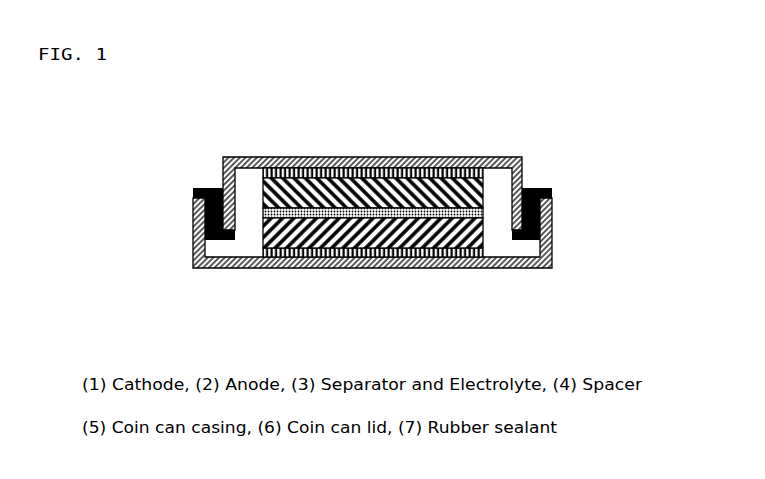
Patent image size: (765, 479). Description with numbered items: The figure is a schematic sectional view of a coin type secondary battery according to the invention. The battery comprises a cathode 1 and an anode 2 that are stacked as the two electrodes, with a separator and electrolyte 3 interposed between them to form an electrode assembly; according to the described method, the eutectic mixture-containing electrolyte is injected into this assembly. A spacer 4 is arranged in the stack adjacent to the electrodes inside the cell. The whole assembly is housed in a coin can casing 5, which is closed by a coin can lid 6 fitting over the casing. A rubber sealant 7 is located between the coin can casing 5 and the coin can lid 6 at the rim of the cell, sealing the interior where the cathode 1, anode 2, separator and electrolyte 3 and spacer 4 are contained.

The cathode 1 is at (373, 190).
The anode 2 is at (342, 240).
The separator and electrolyte 3 is at (416, 206).
The spacer 4 is at (313, 171).
The coin can casing 5 is at (422, 279).
The coin can lid 6 is at (423, 149).
The rubber sealant 7 is at (213, 178).